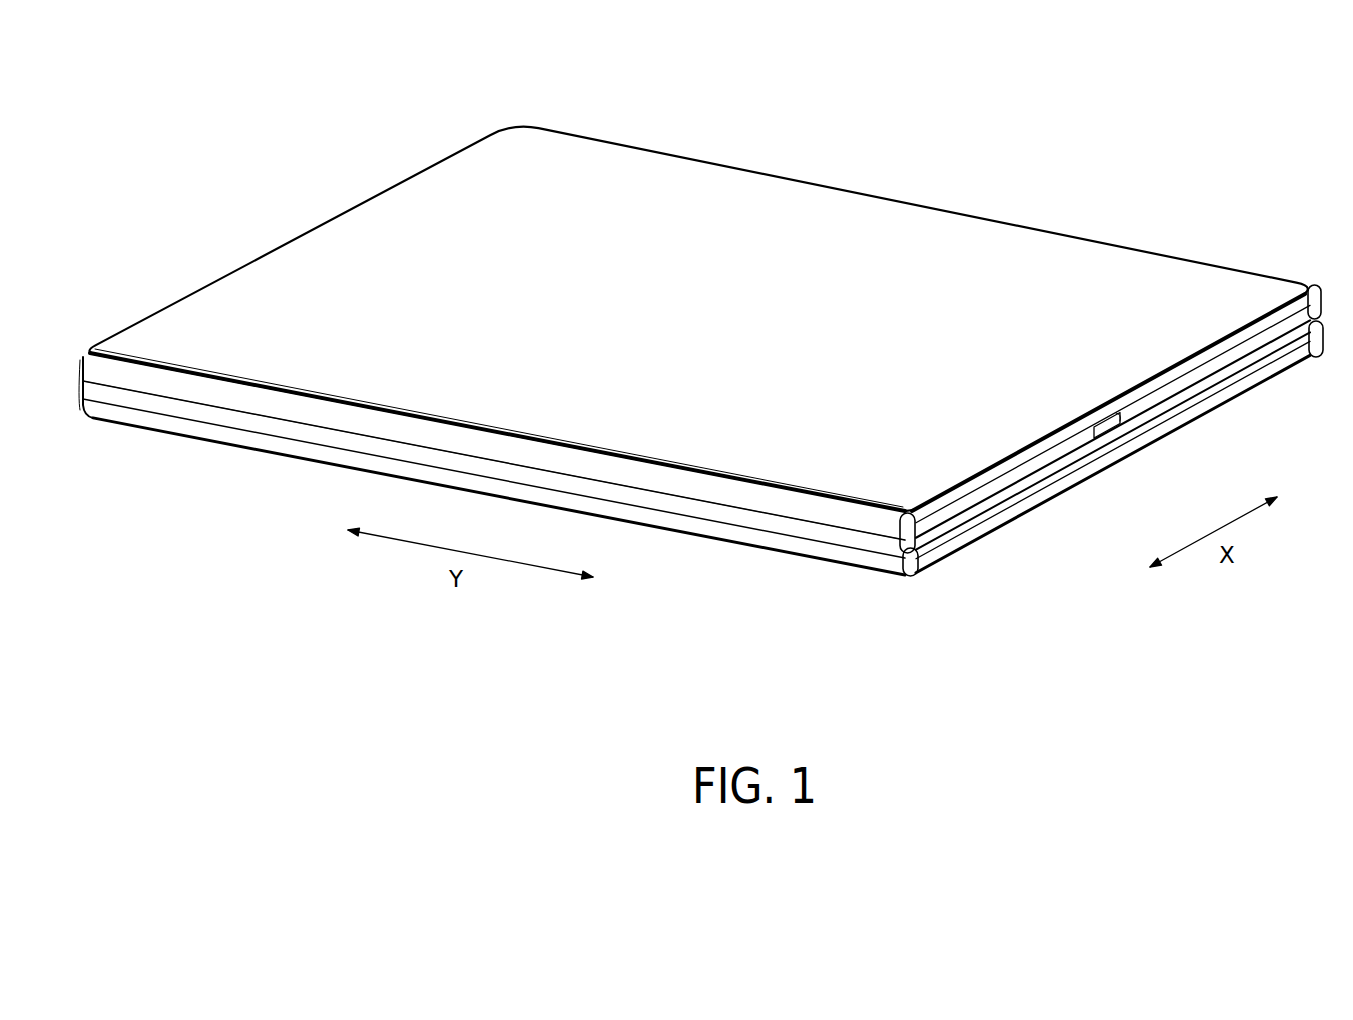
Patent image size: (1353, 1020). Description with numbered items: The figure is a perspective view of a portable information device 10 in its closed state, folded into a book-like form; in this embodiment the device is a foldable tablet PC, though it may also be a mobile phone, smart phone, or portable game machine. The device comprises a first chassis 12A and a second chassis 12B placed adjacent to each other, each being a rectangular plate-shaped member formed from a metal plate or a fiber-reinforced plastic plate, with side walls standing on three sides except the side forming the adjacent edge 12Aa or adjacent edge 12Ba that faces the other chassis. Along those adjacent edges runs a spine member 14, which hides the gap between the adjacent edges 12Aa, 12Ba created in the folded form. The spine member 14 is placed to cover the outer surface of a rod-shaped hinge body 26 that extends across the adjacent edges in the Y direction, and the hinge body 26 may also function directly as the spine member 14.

The portable information device 10 is at (137, 90).
The first chassis 12A is at (810, 213).
The second chassis 12B is at (1170, 441).
The adjacent edge of the first chassis 12Aa is at (913, 523).
The adjacent edge of the second chassis 12Ba is at (927, 575).
The spine member 14 is at (677, 499).
The hinge body 26 is at (494, 460).